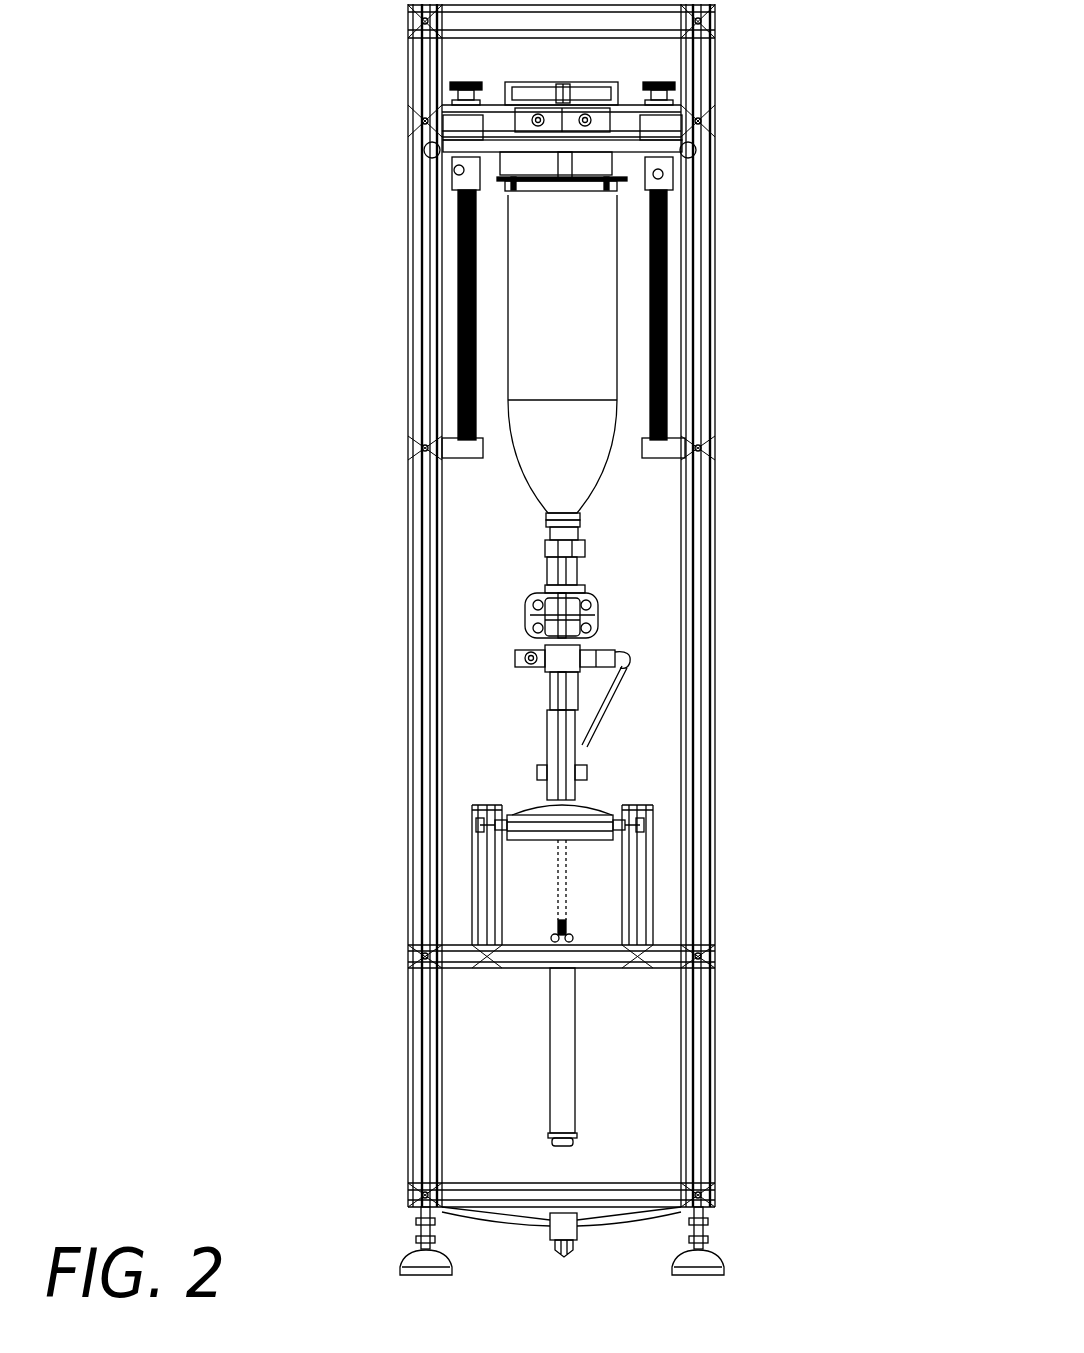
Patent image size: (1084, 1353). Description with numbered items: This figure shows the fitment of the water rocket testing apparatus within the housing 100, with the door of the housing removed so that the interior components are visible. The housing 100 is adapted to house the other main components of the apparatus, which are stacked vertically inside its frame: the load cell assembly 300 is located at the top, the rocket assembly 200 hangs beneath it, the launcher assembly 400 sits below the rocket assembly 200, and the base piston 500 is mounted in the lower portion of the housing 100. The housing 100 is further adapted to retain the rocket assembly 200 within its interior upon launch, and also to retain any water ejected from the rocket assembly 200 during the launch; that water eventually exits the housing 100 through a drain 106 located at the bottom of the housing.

The housing 100 is at (720, 508).
The drain 106 is at (585, 1241).
The rocket assembly 200 is at (503, 487).
The load cell assembly 300 is at (625, 169).
The launcher assembly 400 is at (503, 615).
The base piston 500 is at (603, 747).